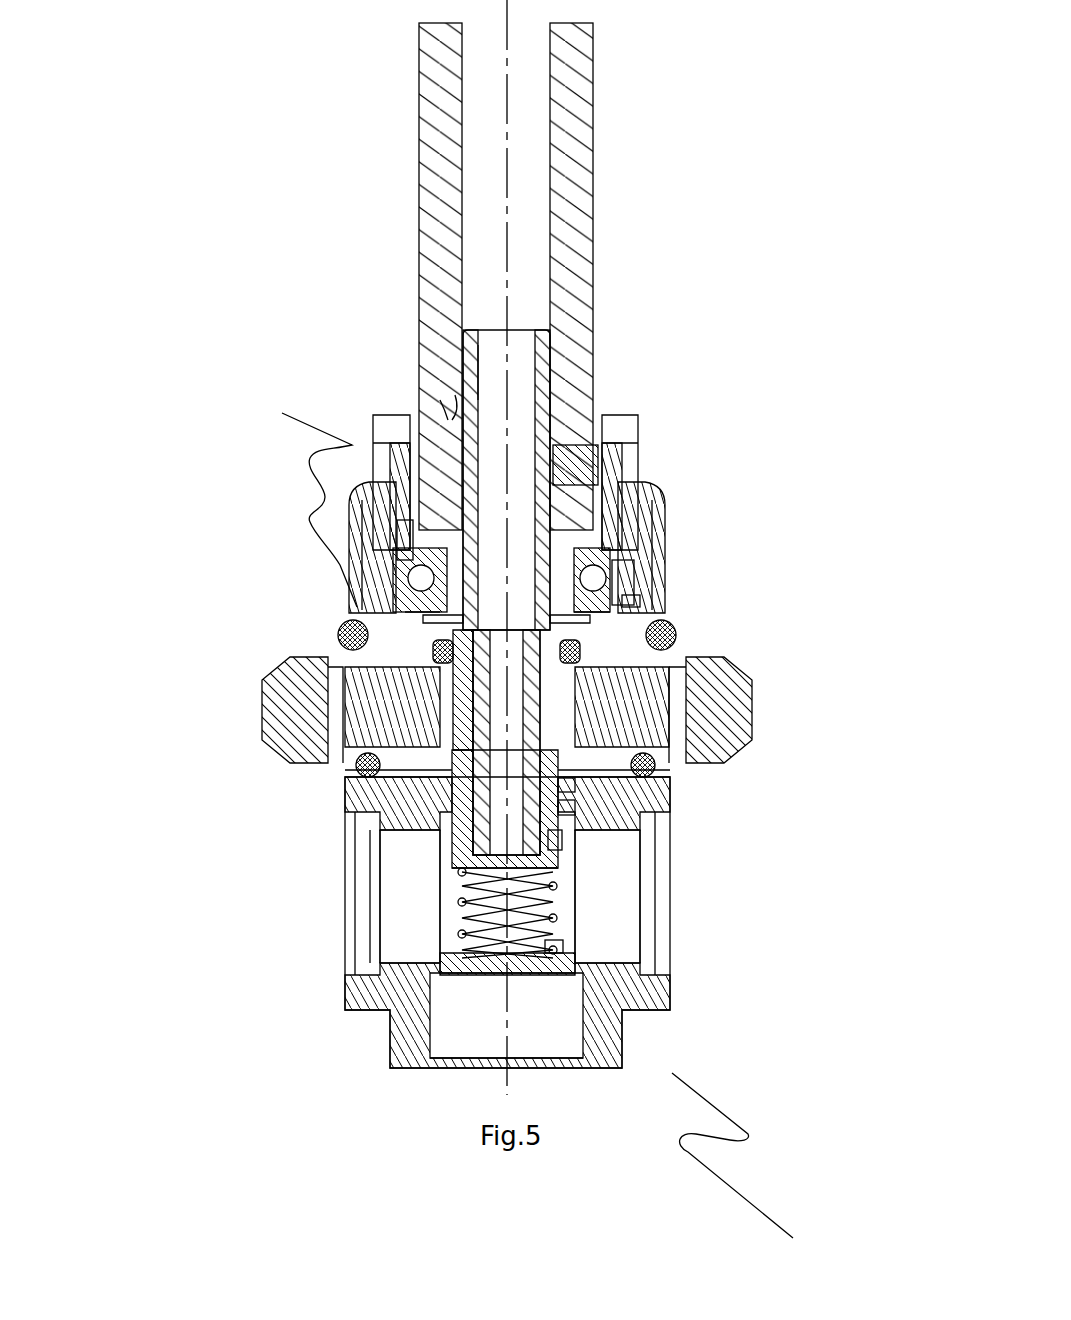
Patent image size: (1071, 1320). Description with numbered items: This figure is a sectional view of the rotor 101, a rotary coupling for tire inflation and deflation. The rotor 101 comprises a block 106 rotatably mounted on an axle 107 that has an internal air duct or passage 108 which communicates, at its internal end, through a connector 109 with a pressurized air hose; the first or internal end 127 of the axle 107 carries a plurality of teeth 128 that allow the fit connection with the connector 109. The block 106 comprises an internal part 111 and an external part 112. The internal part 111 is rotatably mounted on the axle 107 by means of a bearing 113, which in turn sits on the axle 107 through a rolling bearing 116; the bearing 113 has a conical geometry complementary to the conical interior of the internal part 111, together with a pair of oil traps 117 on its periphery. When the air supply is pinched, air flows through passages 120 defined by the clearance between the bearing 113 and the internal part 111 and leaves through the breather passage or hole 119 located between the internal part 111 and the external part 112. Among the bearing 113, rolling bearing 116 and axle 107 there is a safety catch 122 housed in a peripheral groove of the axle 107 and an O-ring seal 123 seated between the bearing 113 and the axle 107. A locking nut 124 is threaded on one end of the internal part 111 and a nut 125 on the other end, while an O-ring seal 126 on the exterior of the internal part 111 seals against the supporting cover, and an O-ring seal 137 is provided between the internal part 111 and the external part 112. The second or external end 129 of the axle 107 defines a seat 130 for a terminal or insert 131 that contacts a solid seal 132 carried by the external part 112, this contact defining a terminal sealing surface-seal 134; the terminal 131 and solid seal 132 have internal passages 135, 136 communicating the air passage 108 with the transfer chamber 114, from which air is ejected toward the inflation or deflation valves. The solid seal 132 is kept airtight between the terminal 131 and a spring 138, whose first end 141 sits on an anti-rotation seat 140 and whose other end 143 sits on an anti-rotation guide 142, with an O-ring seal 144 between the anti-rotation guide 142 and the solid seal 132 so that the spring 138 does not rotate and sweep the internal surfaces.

The rotor 101 is at (762, 1165).
The block 106 is at (282, 413).
The axle 107 is at (555, 388).
The internal air duct or passage 108 is at (455, 410).
The connector 109 is at (423, 388).
The internal part 111 is at (488, 758).
The external part 112 is at (388, 1045).
The bearing 113 is at (674, 614).
The transfer chamber 114 is at (400, 905).
The rolling bearing 116 is at (625, 553).
The oil traps 117 is at (440, 664).
The breather passage or hole 119 is at (407, 772).
The passages 120 is at (620, 585).
The safety catch 122 is at (455, 752).
The O-ring seal 123 is at (605, 588).
The locking nut 124 is at (268, 748).
The nut 125 is at (640, 418).
The O-ring seal 126 is at (336, 630).
The first end or internal end 127 is at (503, 328).
The teeth 128 is at (450, 407).
The second end or external end 129 is at (565, 448).
The seat 130 is at (634, 600).
The terminal or insert 131 is at (455, 723).
The solid seal 132 is at (640, 752).
The terminal sealing surface-seal 134 is at (460, 747).
The internal passage 135 is at (462, 825).
The internal passage 136 is at (462, 866).
The O-ring seal 137 is at (345, 772).
The spring 138 is at (562, 893).
The anti-rotation seat 140 is at (450, 950).
The first end 141 is at (566, 946).
The anti-rotation guide 142 is at (578, 806).
The other end 143 is at (566, 836).
The O-ring seal 144 is at (578, 785).